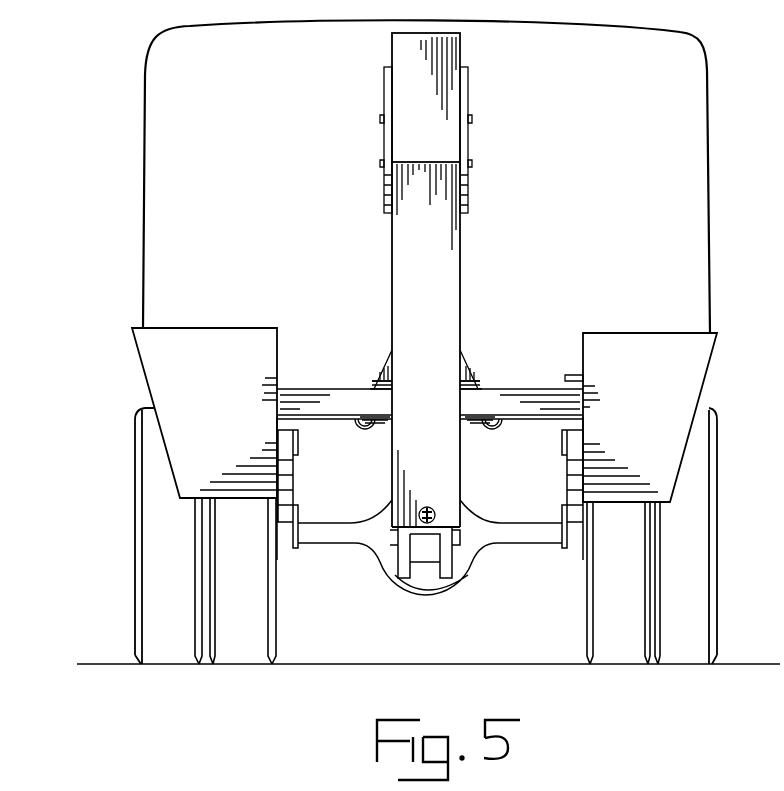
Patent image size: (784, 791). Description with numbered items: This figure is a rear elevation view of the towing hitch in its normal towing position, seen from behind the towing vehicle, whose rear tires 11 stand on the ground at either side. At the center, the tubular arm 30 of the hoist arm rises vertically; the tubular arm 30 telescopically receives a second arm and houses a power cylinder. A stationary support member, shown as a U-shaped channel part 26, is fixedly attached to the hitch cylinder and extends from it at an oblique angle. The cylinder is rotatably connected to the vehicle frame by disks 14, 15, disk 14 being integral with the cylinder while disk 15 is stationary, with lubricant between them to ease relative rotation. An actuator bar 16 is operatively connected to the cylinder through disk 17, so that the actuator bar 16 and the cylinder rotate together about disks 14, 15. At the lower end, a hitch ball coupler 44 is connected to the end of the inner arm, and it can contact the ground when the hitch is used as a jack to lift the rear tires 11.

The rear tires 11 is at (140, 560).
The disk 14 is at (472, 376).
The disk 15 is at (470, 432).
The actuator bar 16 is at (372, 430).
The disk 17 is at (389, 432).
The U-shaped channel part 26 is at (466, 165).
The tubular arm 30 is at (437, 285).
The hitch ball coupler 44 is at (405, 566).